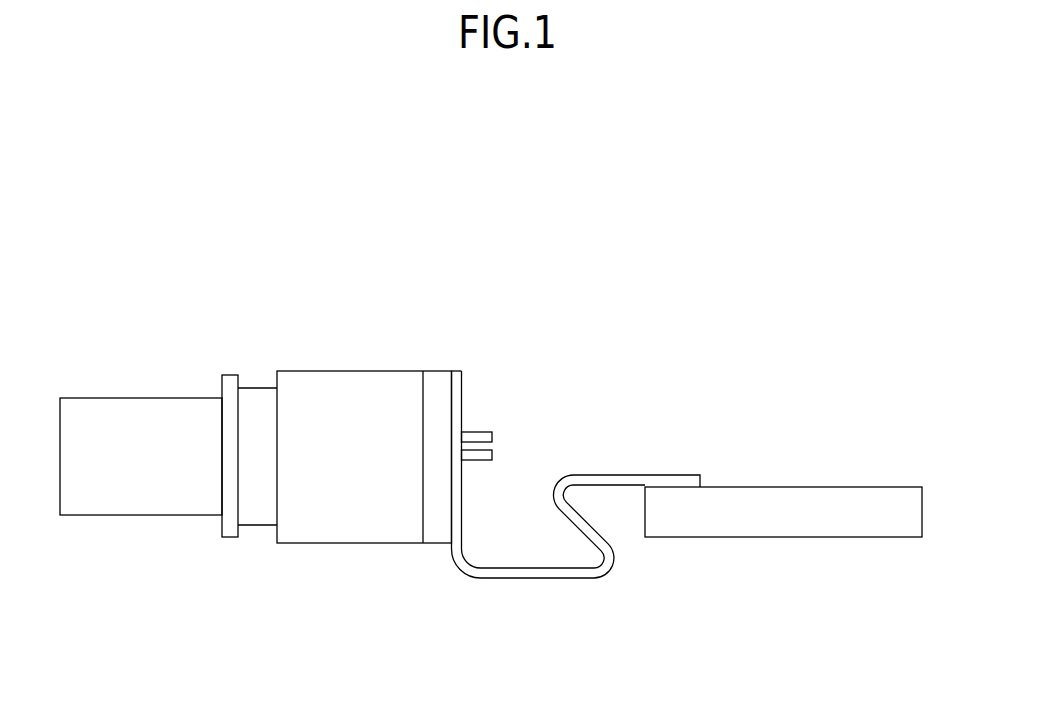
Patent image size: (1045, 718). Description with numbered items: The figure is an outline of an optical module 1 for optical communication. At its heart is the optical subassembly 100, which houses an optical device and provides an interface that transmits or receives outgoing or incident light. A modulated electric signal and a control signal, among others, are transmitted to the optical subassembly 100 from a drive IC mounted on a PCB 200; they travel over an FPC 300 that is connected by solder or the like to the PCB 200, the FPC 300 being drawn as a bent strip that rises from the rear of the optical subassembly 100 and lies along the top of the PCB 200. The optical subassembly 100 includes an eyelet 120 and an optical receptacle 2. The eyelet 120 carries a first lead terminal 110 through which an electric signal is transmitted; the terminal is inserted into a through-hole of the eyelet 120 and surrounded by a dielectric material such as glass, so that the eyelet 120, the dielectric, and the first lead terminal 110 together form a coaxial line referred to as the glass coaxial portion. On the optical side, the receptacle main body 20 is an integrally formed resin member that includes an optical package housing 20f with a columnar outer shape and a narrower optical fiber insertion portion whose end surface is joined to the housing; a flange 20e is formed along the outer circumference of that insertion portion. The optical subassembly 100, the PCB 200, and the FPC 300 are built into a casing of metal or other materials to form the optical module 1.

The optical module 1 is at (711, 378).
The optical receptacle 2 is at (230, 587).
The receptacle main body 20 is at (117, 397).
The flange 20e is at (230, 375).
The optical package housing 20f is at (382, 370).
The optical subassembly 100 is at (588, 242).
The first lead terminal 110 is at (480, 447).
The eyelet 120 is at (443, 522).
The PCB 200 is at (788, 538).
The FPC 300 is at (512, 579).